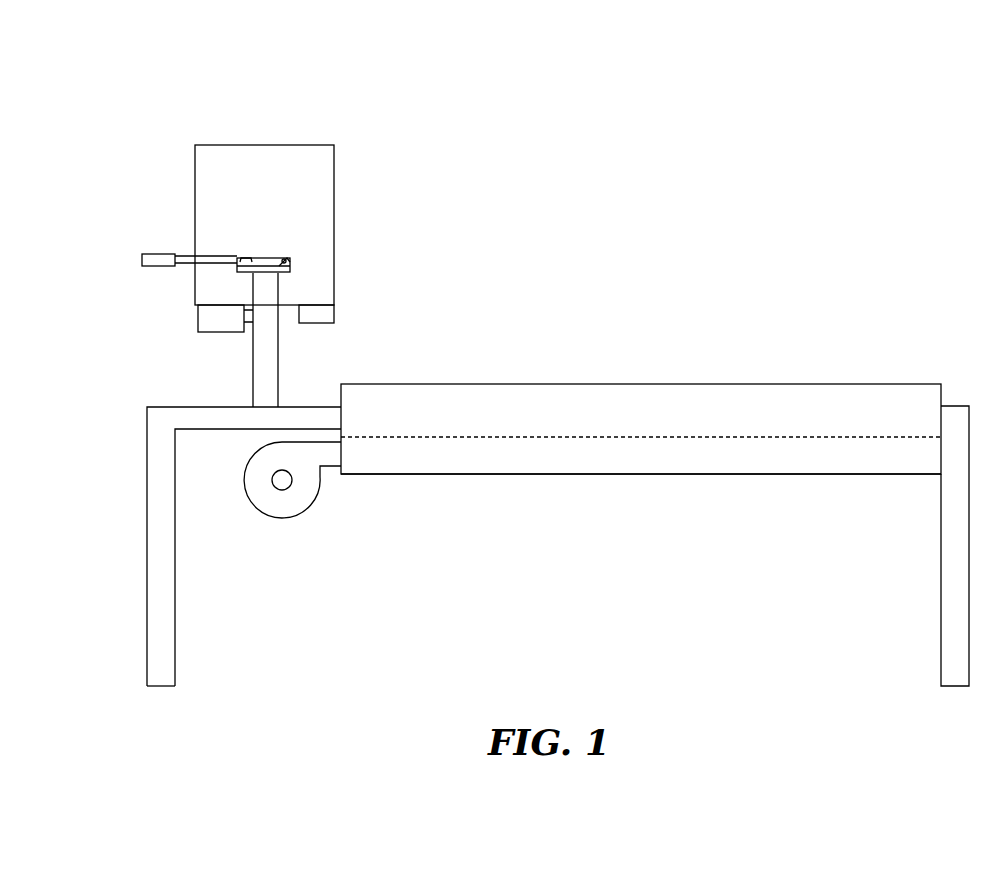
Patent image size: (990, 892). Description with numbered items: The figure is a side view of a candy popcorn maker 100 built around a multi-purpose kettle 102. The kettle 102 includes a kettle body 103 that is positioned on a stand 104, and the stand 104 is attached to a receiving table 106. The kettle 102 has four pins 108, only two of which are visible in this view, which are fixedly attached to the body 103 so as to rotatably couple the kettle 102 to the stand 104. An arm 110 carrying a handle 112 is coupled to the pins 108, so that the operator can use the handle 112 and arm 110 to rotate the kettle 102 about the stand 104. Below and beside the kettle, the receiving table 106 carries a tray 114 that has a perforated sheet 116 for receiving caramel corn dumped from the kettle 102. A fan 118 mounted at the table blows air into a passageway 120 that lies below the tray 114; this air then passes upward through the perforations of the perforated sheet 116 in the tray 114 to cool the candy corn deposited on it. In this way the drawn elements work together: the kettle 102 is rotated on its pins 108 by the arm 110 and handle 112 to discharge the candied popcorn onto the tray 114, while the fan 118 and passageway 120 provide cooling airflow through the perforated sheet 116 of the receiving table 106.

The candy popcorn maker 100 is at (848, 188).
The multi-purpose kettle 102 is at (162, 182).
The kettle body 103 is at (334, 167).
The stand 104 is at (268, 351).
The receiving table 106 is at (155, 406).
The pins 108 is at (247, 258).
The arm 110 is at (187, 267).
The handle 112 is at (162, 255).
The tray 114 is at (855, 385).
The perforated sheet 116 is at (797, 437).
The fan 118 is at (300, 517).
The passageway 120 is at (515, 460).